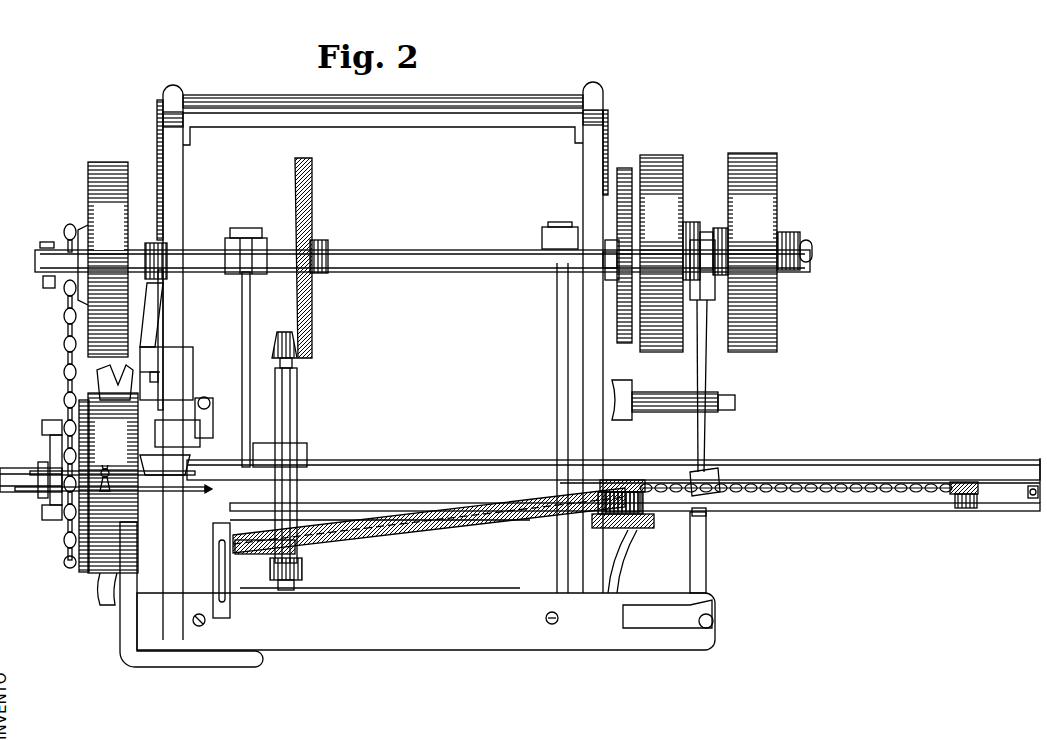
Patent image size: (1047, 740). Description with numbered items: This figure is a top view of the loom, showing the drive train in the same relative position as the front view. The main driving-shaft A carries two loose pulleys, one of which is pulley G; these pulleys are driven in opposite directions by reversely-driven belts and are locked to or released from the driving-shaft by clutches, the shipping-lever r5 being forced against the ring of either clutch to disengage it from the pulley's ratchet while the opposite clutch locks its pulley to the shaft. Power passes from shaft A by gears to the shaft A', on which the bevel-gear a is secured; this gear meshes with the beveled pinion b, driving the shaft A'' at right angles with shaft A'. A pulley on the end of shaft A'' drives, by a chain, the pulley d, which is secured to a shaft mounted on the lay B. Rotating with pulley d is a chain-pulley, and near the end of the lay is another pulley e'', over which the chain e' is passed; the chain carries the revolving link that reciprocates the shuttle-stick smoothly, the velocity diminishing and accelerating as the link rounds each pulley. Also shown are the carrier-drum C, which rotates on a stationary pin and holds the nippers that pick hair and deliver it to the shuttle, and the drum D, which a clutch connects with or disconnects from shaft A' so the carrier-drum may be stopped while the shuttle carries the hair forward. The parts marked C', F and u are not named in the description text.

The main driving-shaft A is at (422, 255).
The shaft A' is at (307, 342).
The shaft A'' is at (296, 465).
The bevel-gear a is at (311, 258).
The beveled pinion b is at (278, 350).
The lay B is at (613, 480).
The carrier-drum C is at (298, 565).
The drive chain C' is at (356, 469).
The drum D is at (103, 259).
The pulley d is at (630, 521).
The chain e' is at (776, 493).
The pulley e'' is at (978, 490).
The bent rod F is at (191, 594).
The loose pulley G is at (707, 252).
The shipping-lever r5 is at (716, 369).
The adjusting rod u is at (106, 414).